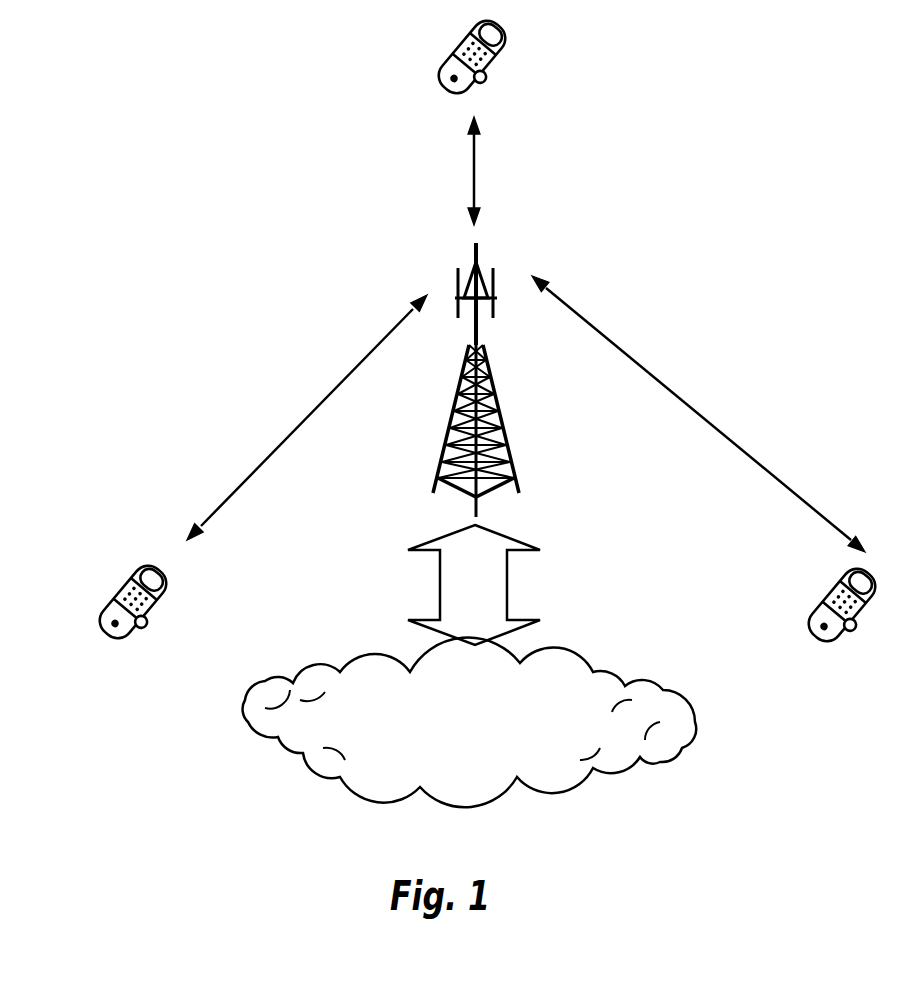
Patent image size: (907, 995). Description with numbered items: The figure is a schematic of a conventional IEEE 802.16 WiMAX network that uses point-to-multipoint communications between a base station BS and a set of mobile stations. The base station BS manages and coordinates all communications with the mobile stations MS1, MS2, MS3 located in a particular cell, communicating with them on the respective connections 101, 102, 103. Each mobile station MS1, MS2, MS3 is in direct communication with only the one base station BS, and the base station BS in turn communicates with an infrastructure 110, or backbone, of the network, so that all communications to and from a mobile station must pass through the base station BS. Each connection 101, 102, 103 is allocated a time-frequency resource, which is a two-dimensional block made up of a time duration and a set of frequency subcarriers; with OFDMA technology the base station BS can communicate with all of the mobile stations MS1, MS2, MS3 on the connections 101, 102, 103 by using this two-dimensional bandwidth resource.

The connection 101 is at (473, 182).
The connection 102 is at (762, 412).
The connection 103 is at (343, 380).
The infrastructure 110 is at (633, 758).
The mobile station MS1 is at (443, 90).
The mobile station MS2 is at (803, 635).
The mobile station MS3 is at (97, 622).
The base station BS is at (477, 308).